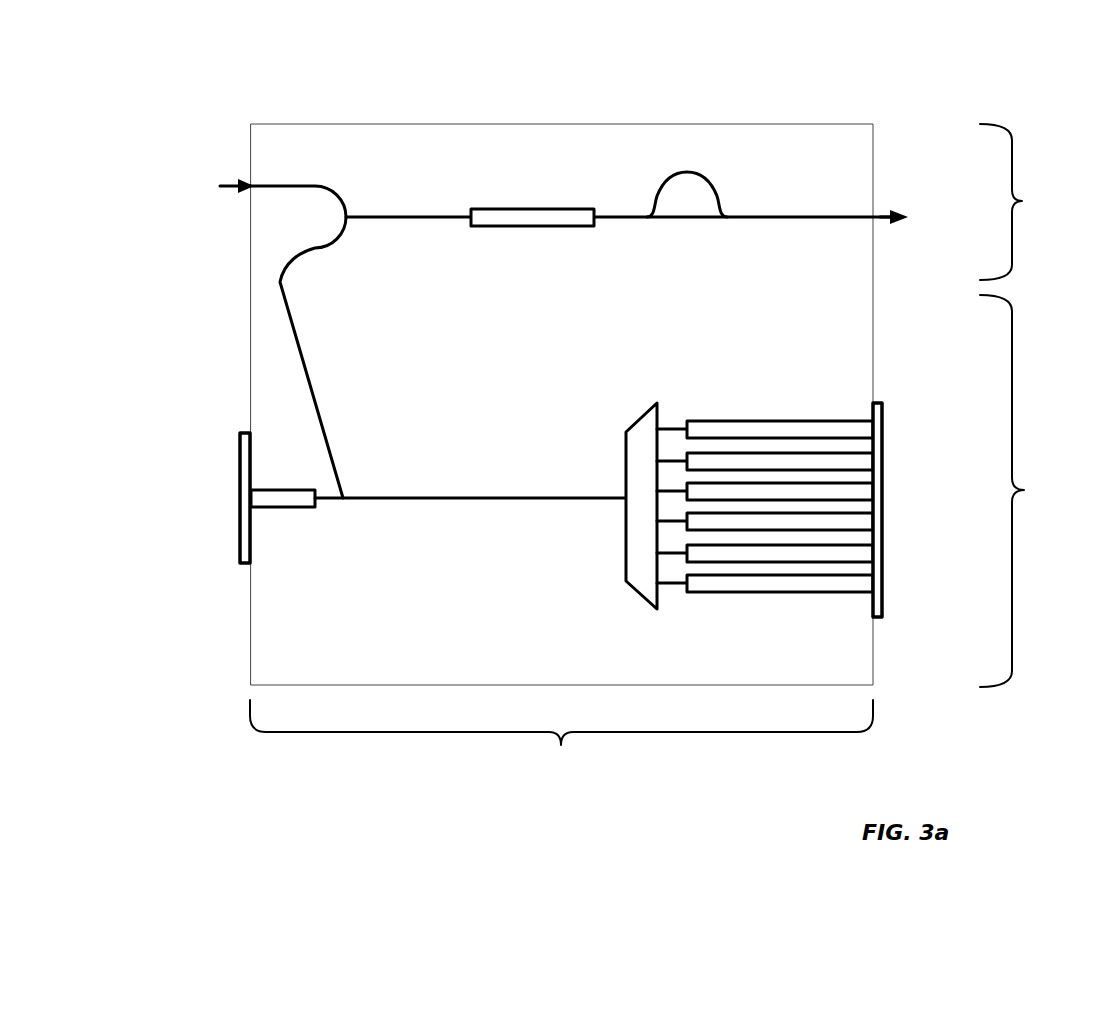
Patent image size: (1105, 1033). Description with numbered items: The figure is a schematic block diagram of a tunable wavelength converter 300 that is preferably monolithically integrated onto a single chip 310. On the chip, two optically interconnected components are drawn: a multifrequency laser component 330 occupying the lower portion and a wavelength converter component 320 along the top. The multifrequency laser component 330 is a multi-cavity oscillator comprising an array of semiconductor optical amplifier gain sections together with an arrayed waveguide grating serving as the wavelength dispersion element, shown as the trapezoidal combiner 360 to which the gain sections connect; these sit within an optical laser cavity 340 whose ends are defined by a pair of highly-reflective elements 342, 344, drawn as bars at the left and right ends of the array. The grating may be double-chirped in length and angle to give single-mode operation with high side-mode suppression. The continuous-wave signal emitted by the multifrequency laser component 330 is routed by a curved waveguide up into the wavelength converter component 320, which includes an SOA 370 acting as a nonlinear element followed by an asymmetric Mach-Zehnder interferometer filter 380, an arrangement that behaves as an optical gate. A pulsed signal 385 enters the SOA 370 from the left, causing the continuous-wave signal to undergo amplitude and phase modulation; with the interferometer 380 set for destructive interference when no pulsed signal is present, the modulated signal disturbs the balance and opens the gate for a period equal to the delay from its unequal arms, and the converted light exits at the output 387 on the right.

The tunable wavelength converter 300 is at (843, 59).
The single chip 310 is at (452, 125).
The wavelength converter component 320 is at (663, 311).
The multifrequency laser component 330 is at (1029, 491).
The optical laser cavity 340 is at (561, 739).
The highly-reflective element 342 is at (240, 507).
The highly-reflective element 344 is at (884, 507).
The multiplexer / combiner 360 is at (626, 432).
The SOA 370 is at (545, 211).
The asymmetric Mach-Zehnder Interferometer filter 380 is at (678, 200).
The pulsed signal λsig 385 is at (220, 184).
The output port 387 is at (880, 214).